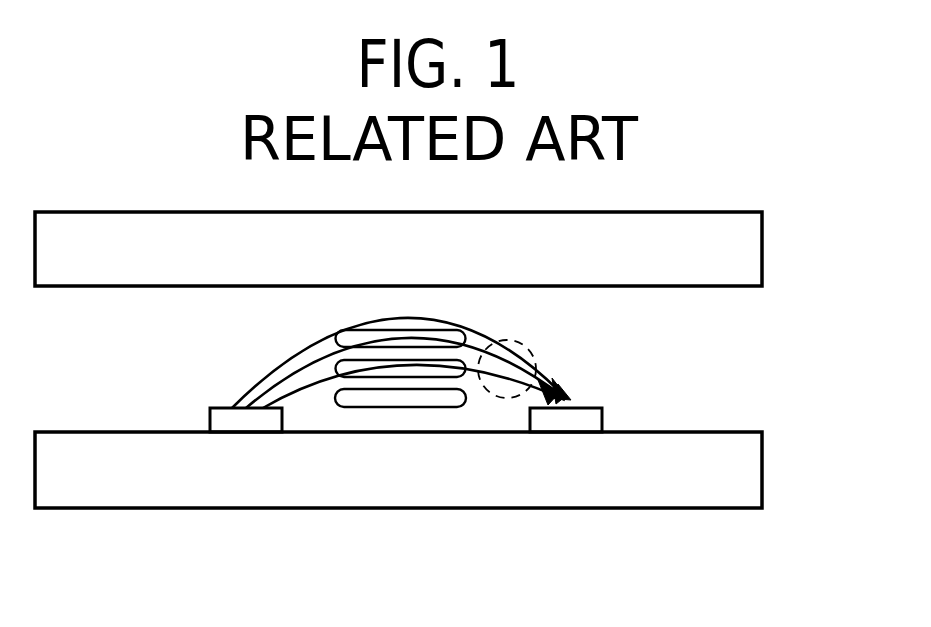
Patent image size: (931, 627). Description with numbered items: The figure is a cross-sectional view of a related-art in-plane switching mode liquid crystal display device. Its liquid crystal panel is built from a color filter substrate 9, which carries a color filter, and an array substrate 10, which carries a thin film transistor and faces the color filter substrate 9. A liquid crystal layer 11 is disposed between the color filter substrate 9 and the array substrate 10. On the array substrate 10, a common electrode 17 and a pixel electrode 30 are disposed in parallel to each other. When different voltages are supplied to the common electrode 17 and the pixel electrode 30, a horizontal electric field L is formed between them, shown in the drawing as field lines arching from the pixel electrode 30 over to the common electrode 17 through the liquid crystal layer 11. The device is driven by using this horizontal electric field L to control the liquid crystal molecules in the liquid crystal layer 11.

The color filter substrate 9 is at (797, 204).
The array substrate 10 is at (797, 425).
The liquid crystal layer 11 is at (797, 285).
The pixel electrode 30 is at (242, 420).
The common electrode 17 is at (575, 420).
The horizontal electric field L is at (493, 398).